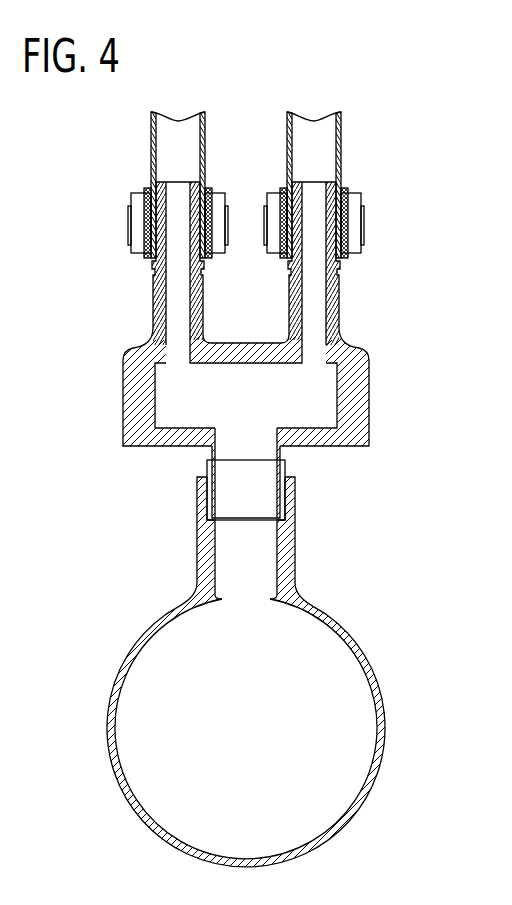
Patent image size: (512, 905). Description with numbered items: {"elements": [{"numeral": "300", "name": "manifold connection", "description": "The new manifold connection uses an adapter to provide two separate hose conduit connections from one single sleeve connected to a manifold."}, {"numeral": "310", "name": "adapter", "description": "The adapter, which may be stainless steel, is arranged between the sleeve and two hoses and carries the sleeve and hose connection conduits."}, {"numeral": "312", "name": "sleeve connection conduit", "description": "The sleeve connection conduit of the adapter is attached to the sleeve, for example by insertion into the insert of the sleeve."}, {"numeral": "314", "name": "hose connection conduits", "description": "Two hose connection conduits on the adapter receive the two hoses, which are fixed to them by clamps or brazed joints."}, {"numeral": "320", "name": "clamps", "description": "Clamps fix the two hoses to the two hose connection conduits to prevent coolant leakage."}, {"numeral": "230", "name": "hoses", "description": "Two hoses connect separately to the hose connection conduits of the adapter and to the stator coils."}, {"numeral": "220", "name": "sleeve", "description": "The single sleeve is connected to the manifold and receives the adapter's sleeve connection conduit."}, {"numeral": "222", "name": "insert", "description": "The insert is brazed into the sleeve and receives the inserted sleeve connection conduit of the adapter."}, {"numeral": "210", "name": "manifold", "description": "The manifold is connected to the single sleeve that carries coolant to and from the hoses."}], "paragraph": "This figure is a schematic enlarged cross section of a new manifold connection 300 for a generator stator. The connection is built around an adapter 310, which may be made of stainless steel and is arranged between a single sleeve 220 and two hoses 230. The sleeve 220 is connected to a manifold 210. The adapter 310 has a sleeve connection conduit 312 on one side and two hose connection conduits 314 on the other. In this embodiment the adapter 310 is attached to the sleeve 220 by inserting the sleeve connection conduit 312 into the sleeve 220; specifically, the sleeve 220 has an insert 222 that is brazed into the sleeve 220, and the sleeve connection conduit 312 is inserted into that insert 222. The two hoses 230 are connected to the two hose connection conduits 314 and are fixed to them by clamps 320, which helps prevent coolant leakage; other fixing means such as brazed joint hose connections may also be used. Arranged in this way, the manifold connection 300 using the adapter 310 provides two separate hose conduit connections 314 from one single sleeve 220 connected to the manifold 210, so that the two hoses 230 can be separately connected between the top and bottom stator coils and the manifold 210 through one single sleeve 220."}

The tubing assembly 300 is at (374, 87).
The Y-connector body 310 is at (396, 190).
The outlet port of connector 312 is at (281, 452).
The inlet arms of connector 314 is at (153, 302).
The tube clamps 320 is at (128, 221).
The tubes 230 is at (151, 152).
The neck of flask 220 is at (295, 555).
The opening of neck 222 is at (207, 466).
The flask bulb 210 is at (149, 631).